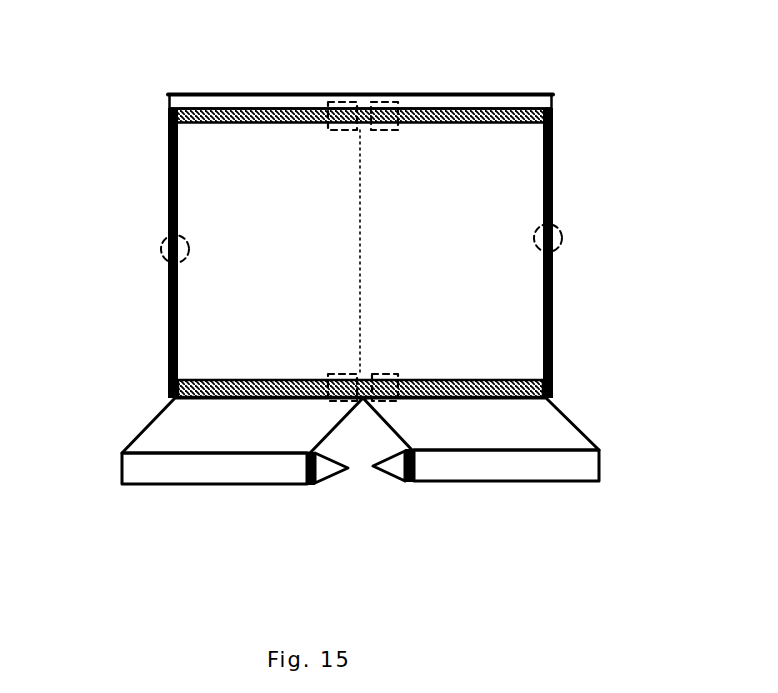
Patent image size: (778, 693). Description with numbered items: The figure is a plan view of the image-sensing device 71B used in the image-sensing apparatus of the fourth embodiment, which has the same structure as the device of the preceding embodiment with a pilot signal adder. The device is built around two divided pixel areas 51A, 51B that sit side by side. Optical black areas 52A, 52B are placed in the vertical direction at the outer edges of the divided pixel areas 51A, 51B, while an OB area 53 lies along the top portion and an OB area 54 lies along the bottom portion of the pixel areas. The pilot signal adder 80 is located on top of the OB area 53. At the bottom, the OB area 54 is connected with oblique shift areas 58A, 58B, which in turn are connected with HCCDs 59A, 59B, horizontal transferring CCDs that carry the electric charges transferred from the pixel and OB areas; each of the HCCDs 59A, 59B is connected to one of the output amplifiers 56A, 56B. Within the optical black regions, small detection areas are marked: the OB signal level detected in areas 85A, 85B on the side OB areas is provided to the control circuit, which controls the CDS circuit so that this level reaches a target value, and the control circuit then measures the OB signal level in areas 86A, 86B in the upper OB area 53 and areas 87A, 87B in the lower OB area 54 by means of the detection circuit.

The image-sensing device 71B is at (100, 63).
The pilot signal adder 80 is at (505, 102).
The OB area 53 is at (425, 108).
The OB area 54 is at (555, 376).
The optical black area 52A is at (167, 193).
The optical black area 52B is at (553, 184).
The divided pixel area 51A is at (203, 293).
The divided pixel area 51B is at (515, 313).
The area 85A is at (160, 250).
The area 85B is at (563, 241).
The area 86A is at (330, 130).
The area 86B is at (384, 130).
The area 87A is at (340, 373).
The area 87B is at (392, 373).
The oblique shift area 58A is at (160, 420).
The oblique shift area 58B is at (570, 431).
The HCCD 59A is at (173, 477).
The HCCD 59B is at (583, 482).
The output amplifier 56A is at (330, 485).
The output amplifier 56B is at (388, 485).